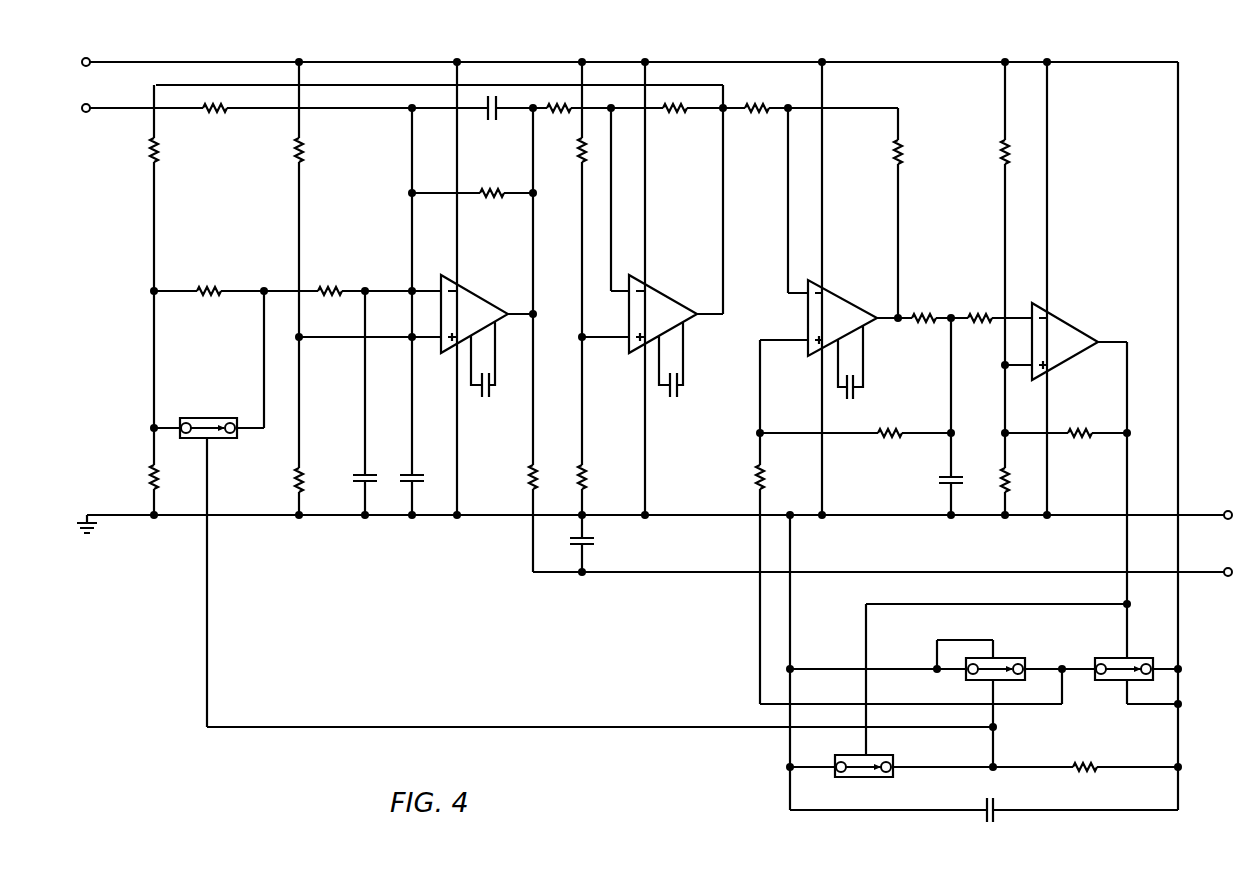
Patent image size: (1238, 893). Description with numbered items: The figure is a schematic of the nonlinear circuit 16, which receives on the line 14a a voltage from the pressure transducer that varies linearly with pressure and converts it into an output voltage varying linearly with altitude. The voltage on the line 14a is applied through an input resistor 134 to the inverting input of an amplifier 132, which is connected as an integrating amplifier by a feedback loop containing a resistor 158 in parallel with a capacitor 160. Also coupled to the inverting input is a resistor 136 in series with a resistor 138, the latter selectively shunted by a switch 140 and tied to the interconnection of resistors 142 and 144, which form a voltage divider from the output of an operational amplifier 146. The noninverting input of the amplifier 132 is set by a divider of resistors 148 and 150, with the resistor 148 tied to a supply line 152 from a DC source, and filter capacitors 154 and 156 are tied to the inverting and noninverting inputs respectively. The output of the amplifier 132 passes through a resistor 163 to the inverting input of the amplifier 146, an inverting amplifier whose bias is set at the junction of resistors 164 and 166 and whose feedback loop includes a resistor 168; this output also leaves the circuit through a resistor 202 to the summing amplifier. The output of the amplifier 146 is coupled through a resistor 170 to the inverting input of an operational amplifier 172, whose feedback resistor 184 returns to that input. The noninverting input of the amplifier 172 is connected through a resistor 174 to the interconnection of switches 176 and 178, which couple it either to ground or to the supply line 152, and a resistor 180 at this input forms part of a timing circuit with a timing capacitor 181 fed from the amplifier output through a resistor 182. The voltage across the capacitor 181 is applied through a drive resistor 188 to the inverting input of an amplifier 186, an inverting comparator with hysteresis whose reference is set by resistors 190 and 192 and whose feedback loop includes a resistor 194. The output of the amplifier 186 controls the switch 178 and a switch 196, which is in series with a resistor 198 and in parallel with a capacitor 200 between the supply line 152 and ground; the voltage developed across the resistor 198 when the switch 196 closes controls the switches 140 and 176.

The line 14a is at (114, 110).
The nonlinear circuit 16 is at (428, 652).
The amplifier 132 is at (480, 311).
The input resistor 134 is at (217, 112).
The resistor 136 is at (331, 289).
The resistor 138 is at (209, 289).
The switch 140 is at (209, 420).
The resistor 142 is at (160, 150).
The resistor 144 is at (152, 477).
The operational amplifier 146 is at (665, 311).
The resistor 148 is at (301, 150).
The resistor 150 is at (297, 480).
The supply line 152 is at (151, 62).
The filter capacitor 154 is at (363, 477).
The filter capacitor 156 is at (431, 471).
The resistor 158 is at (491, 197).
The capacitor 160 is at (493, 121).
The resistor 163 is at (559, 112).
The resistor 164 is at (580, 154).
The resistor 166 is at (584, 477).
The resistor 168 is at (676, 112).
The resistor 170 is at (756, 112).
The operational amplifier 172 is at (845, 314).
The resistor 174 is at (758, 477).
The switch 176 is at (1010, 663).
The switch 178 is at (1114, 656).
The resistor 180 is at (892, 432).
The timing capacitor 181 is at (948, 482).
The resistor 182 is at (923, 316).
The resistor 184 is at (901, 152).
The amplifier 186 is at (1068, 338).
The drive resistor 188 is at (980, 316).
The resistor 190 is at (1003, 152).
The resistor 192 is at (1003, 478).
The resistor 194 is at (1080, 432).
The switch 196 is at (881, 755).
The resistor 198 is at (1084, 766).
The capacitor 200 is at (995, 808).
The resistor 202 is at (531, 477).